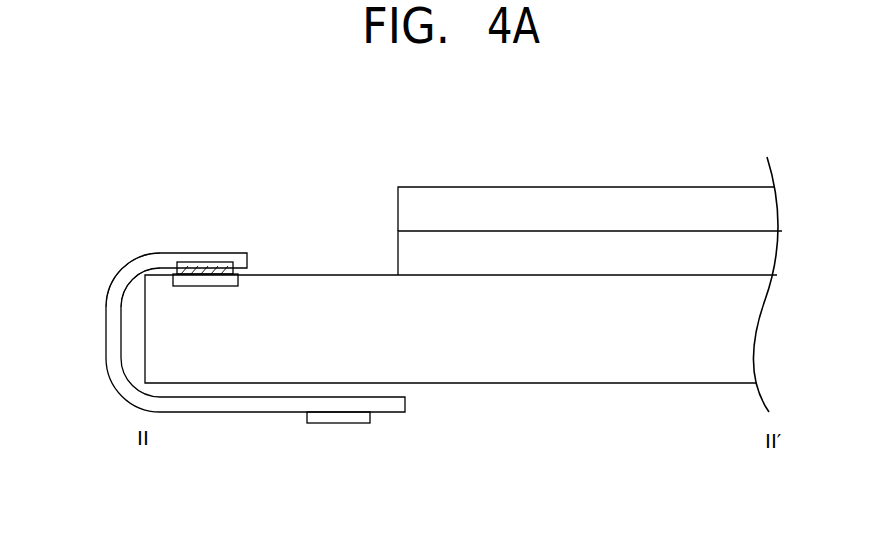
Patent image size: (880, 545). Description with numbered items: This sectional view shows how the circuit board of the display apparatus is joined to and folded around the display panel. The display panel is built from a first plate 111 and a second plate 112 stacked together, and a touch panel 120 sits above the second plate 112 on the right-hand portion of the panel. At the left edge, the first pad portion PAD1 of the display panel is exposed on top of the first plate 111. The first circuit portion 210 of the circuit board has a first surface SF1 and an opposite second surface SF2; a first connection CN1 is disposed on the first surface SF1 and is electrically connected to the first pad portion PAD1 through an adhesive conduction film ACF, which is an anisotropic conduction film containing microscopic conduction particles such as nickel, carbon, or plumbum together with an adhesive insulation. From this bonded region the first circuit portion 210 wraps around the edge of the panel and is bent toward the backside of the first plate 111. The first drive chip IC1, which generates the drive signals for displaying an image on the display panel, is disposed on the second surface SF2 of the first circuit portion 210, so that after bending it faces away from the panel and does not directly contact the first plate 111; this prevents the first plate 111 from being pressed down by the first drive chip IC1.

The first plate 111 is at (742, 332).
The second plate 112 is at (765, 258).
The touch panel 120 is at (765, 213).
The first circuit portion 210 is at (110, 333).
The first surface SF1 is at (121, 294).
The second surface SF2 is at (112, 300).
The first pad portion PAD1 is at (218, 279).
The first connection CN1 is at (183, 262).
The adhesive conduction film ACF is at (205, 272).
The first drive chip IC1 is at (340, 423).